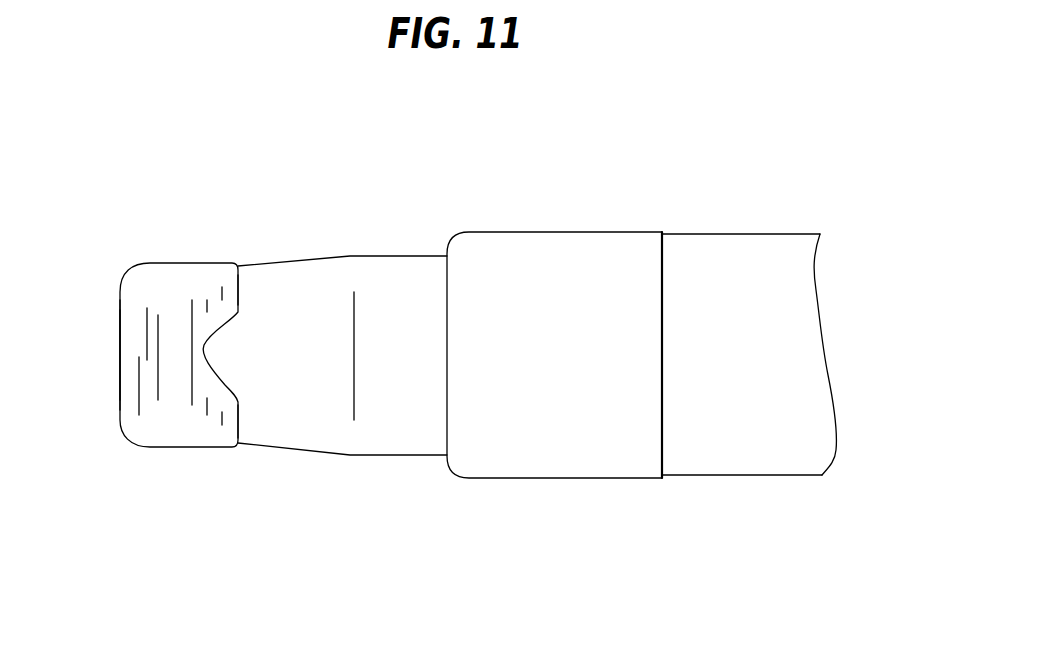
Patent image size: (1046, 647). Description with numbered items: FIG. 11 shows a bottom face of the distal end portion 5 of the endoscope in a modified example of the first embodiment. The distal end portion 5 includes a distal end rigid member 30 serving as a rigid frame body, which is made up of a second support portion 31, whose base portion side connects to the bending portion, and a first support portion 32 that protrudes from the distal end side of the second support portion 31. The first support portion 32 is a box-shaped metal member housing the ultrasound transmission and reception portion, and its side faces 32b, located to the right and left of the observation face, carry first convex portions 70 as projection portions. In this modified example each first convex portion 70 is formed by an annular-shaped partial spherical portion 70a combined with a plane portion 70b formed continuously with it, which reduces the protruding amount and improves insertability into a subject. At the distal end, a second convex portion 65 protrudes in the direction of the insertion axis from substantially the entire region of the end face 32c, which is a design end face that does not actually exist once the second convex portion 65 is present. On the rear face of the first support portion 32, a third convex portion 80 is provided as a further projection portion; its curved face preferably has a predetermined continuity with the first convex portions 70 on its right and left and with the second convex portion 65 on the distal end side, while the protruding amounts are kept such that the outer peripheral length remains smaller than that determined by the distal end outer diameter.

The distal end portion 5 is at (481, 178).
The distal end rigid member 30 is at (647, 575).
The second support portion 31 is at (825, 538).
The first support portion 32 is at (447, 538).
The side faces 32b is at (282, 265).
The end face 32c is at (383, 418).
The second convex portion 65 is at (118, 355).
The first convex portions 70 is at (191, 246).
The partial spherical portion 70a is at (238, 262).
The plane portion 70b is at (157, 262).
The third convex portion 80 is at (168, 415).